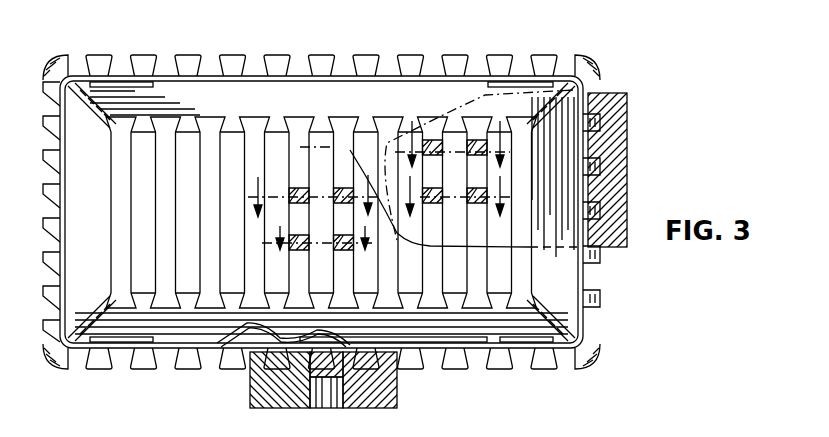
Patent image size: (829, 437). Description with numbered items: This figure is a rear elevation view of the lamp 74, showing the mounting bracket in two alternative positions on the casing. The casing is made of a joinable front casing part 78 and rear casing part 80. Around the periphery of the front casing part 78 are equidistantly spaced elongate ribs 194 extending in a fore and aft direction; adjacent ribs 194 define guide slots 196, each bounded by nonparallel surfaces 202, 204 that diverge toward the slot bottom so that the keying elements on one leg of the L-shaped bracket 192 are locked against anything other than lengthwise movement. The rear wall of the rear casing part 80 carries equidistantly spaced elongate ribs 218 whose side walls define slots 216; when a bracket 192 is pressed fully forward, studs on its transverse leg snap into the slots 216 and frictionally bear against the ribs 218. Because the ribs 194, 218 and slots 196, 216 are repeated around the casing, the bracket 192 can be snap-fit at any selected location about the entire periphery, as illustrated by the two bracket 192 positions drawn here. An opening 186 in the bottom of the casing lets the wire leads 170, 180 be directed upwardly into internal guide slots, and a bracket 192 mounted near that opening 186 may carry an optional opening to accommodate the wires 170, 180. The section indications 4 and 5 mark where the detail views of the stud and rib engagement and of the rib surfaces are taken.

The lamp 74 is at (533, 33).
The rear casing part 80 is at (83, 150).
The elongate ribs 218 is at (182, 177).
The front casing part 78 is at (238, 56).
The guide slots 196 is at (347, 63).
The elongate ribs 194 is at (455, 61).
The nonparallel surface 202 is at (522, 63).
The nonparallel surface 204 is at (527, 63).
The L-shaped bracket 192 is at (620, 130).
The opening 186 is at (398, 337).
The wire lead 180 is at (243, 344).
The wire lead 170 is at (210, 253).
The slots 216 is at (163, 252).
The section line 4- 4 is at (379, 157).
The section line 5- 5 is at (386, 229).